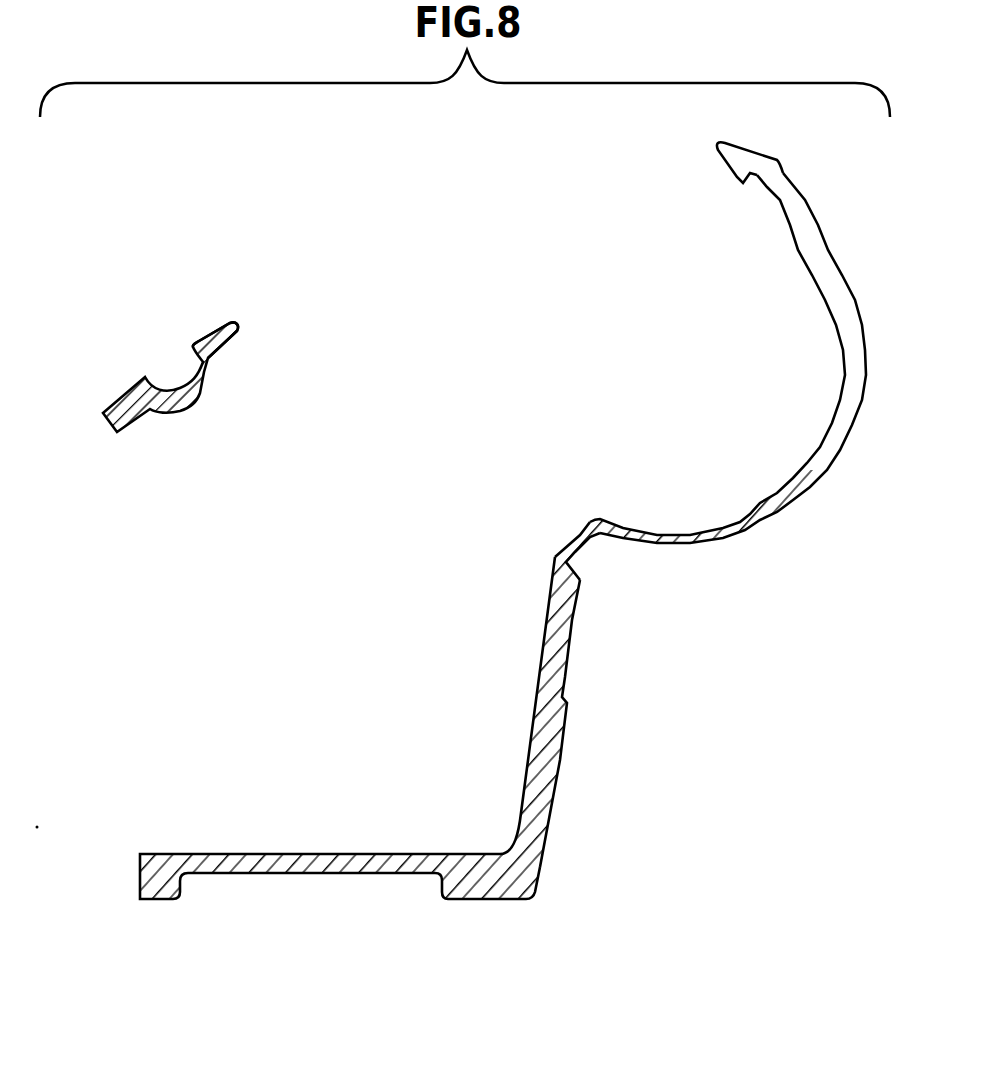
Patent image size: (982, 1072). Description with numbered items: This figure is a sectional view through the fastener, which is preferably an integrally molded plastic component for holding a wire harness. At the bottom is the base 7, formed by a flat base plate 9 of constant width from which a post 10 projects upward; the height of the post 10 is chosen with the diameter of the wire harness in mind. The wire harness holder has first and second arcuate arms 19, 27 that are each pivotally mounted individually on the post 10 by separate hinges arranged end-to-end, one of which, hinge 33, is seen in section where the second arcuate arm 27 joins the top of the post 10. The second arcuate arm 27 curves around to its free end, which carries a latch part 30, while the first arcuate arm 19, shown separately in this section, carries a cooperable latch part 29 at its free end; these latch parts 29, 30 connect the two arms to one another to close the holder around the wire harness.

The base 7 is at (197, 843).
The base plate 9 is at (347, 853).
The post 10 is at (564, 733).
The hinge 33 is at (562, 546).
The second arcuate arm 27 is at (800, 493).
The latch part 30 is at (743, 185).
The first arcuate arm 19 is at (130, 422).
The latch part 29 is at (197, 354).